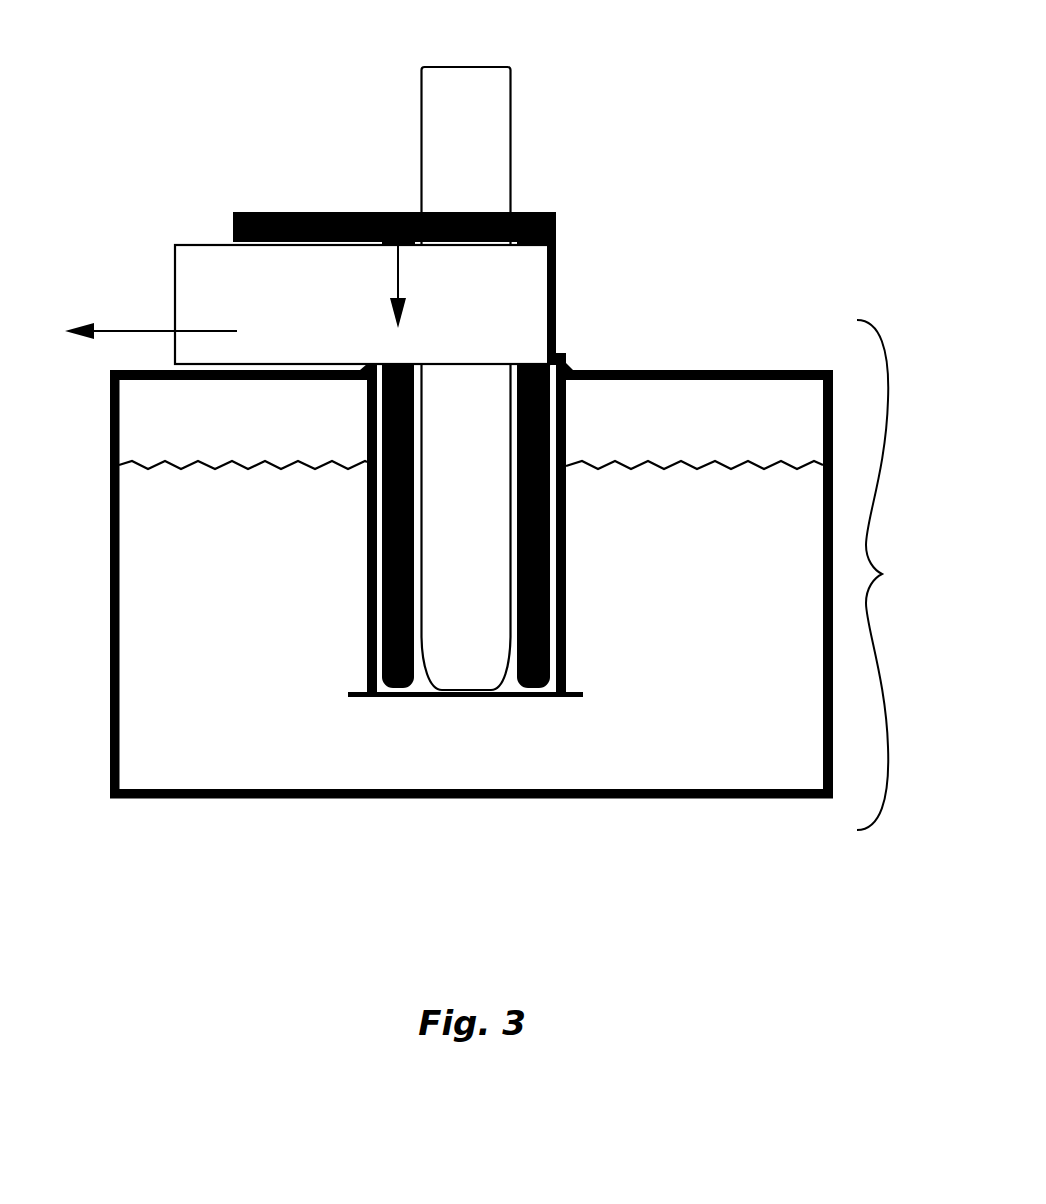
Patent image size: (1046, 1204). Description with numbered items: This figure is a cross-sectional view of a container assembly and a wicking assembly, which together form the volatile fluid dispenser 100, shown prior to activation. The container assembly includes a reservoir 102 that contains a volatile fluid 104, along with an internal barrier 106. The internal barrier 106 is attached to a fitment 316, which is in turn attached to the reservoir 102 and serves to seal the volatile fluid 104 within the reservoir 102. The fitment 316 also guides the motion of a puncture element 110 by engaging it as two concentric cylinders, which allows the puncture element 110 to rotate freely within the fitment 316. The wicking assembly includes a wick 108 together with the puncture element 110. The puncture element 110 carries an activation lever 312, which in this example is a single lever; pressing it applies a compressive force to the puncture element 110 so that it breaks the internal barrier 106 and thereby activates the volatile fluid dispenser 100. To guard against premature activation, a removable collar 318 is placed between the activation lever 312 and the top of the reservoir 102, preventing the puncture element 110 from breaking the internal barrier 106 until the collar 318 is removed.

The volatile fluid dispenser 100 is at (896, 575).
The reservoir 102 is at (708, 428).
The volatile fluid 104 is at (722, 735).
The internal barrier 106 is at (423, 695).
The wick 108 is at (465, 105).
The puncture element 110 is at (538, 695).
The activation lever 312 is at (308, 212).
The fitment 316 is at (565, 437).
The removable collar 318 is at (207, 299).